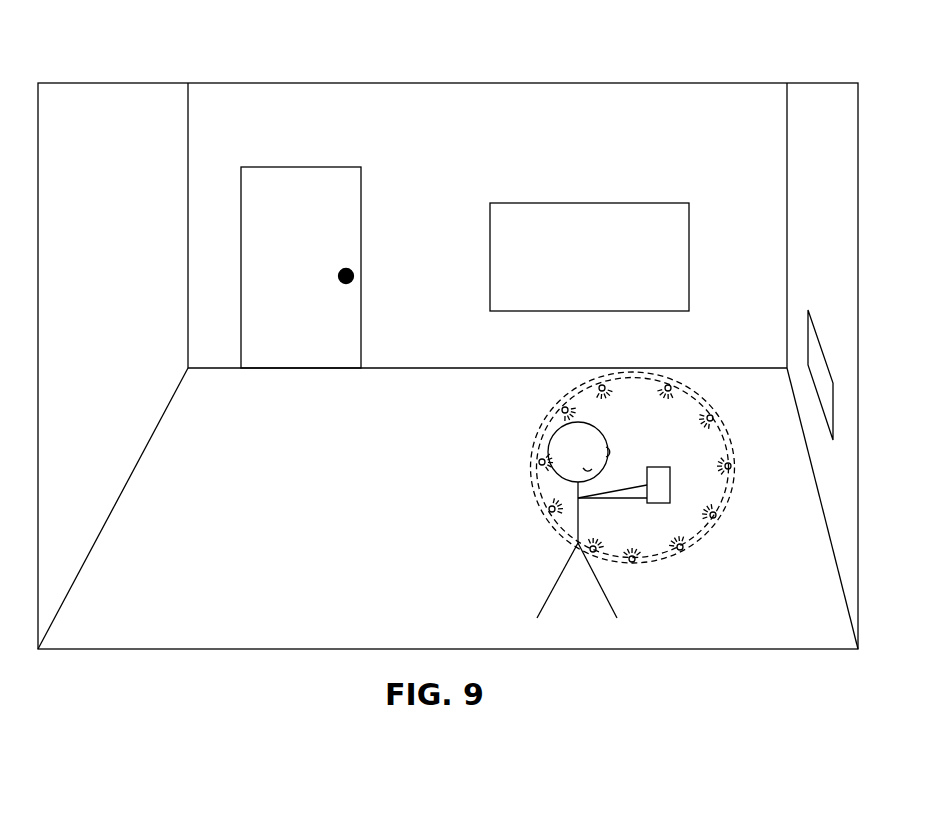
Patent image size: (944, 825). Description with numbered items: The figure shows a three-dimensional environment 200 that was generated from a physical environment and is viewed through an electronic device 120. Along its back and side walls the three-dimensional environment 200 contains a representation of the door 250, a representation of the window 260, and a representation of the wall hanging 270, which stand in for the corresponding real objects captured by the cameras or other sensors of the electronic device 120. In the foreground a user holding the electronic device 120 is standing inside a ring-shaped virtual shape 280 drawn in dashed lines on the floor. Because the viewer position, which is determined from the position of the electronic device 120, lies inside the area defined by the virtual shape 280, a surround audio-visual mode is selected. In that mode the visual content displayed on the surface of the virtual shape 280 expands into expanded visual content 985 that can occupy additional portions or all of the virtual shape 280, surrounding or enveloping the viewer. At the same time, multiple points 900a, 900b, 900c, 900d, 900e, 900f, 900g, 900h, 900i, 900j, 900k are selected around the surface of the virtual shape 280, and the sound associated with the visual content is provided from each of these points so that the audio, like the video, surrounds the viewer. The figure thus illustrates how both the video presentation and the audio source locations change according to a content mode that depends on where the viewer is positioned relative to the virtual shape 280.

The three-dimensional environment 200 is at (118, 55).
The representation of the door 250 is at (291, 167).
The representation of the window 260 is at (627, 203).
The representation of the wall hanging 270 is at (808, 311).
The virtual shape 280 is at (548, 454).
The electronic device 120 is at (657, 503).
The expanded visual content 985 is at (729, 441).
The point on the surface of the virtual shape 900a is at (668, 386).
The point on the surface of the virtual shape 900b is at (712, 418).
The point on the surface of the virtual shape 900c is at (731, 466).
The point on the surface of the virtual shape 900d is at (715, 516).
The point on the surface of the virtual shape 900e is at (683, 548).
The point on the surface of the virtual shape 900f is at (634, 561).
The point on the surface of the virtual shape 900g is at (595, 552).
The point on the surface of the virtual shape 900h is at (551, 511).
The point on the surface of the virtual shape 900i is at (540, 462).
The point on the surface of the virtual shape 900j is at (565, 409).
The point on the surface of the virtual shape 900k is at (602, 386).